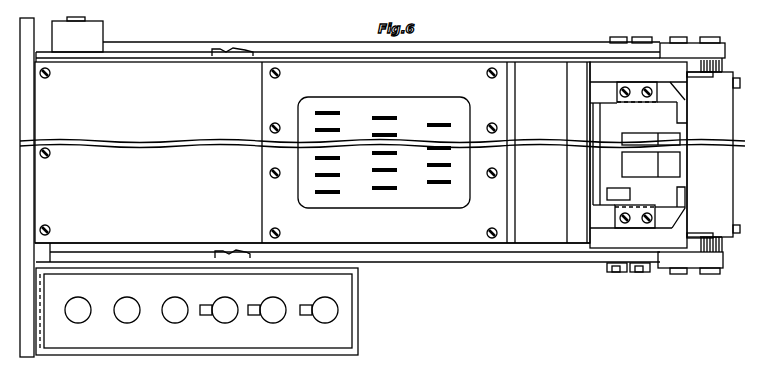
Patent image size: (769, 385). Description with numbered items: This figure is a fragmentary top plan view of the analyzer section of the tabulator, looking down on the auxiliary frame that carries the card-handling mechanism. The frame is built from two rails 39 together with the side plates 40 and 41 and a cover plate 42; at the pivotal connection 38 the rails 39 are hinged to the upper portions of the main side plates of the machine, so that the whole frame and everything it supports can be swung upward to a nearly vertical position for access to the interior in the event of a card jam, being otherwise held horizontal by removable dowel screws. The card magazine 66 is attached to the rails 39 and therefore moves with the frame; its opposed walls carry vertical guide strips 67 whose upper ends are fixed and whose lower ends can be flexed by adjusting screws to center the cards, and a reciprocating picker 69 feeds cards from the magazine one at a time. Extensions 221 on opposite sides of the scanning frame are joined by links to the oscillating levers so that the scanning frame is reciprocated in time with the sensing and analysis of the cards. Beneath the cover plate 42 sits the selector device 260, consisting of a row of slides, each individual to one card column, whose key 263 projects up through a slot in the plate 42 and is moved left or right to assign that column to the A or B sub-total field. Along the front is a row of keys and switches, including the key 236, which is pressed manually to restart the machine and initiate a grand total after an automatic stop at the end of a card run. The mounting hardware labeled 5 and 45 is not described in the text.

The frame wall 5 is at (28, 41).
The top housing box 45 is at (78, 17).
The side plate 41 is at (316, 58).
The rails 39 is at (190, 50).
The side plate 40 is at (468, 248).
The extensions 221 is at (235, 48).
The cover plate 42 is at (128, 76).
The selector device 260 is at (384, 93).
The key 263 is at (432, 123).
The vertical guide strips 67 is at (628, 106).
The reciprocating picker 69 is at (672, 136).
The card magazine 66 is at (691, 206).
The pivotal connection 38 is at (690, 43).
The key 236 is at (176, 307).